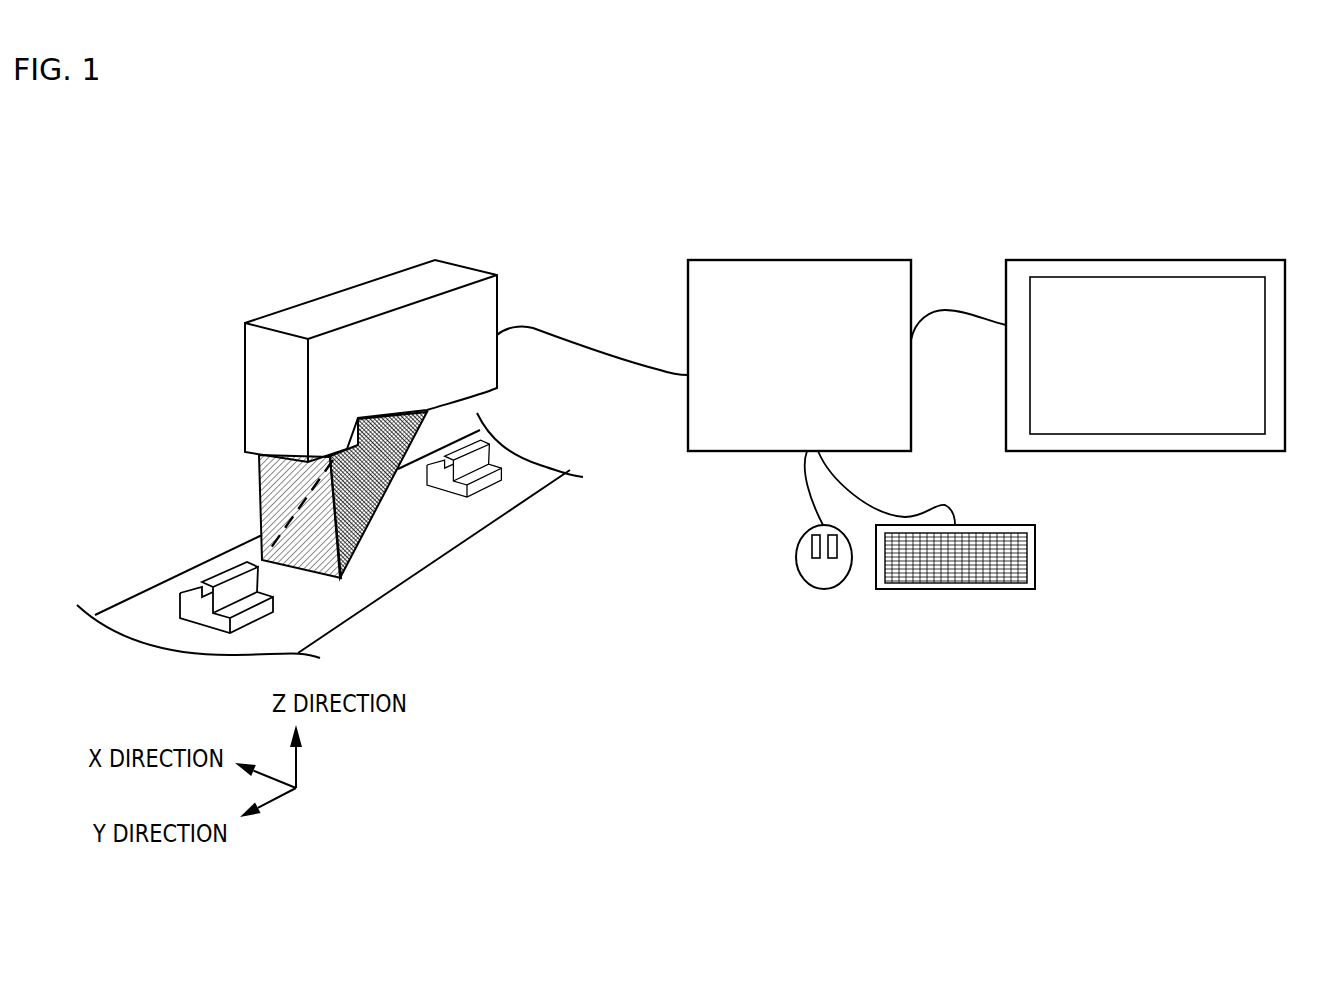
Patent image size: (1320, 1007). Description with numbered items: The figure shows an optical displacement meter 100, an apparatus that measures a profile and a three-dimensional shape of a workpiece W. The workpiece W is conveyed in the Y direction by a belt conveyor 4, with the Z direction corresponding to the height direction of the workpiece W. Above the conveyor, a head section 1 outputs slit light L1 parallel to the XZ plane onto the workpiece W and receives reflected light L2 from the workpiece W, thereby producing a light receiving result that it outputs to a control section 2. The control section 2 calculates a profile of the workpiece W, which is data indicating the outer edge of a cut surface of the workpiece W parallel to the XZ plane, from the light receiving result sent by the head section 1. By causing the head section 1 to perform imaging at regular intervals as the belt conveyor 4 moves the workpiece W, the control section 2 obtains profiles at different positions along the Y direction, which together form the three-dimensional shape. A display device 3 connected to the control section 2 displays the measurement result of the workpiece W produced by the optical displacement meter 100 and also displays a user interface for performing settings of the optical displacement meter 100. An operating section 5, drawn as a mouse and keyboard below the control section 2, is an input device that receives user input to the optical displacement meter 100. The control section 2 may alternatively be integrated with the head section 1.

The optical displacement meter 100 is at (182, 183).
The head section 1 is at (365, 292).
The control section 2 is at (757, 260).
The display device 3 is at (1102, 260).
The belt conveyor 4 is at (157, 615).
The operating section 5 is at (812, 603).
The workpiece W is at (220, 577).
The slit light L1 is at (275, 498).
The reflected light L2 is at (355, 518).